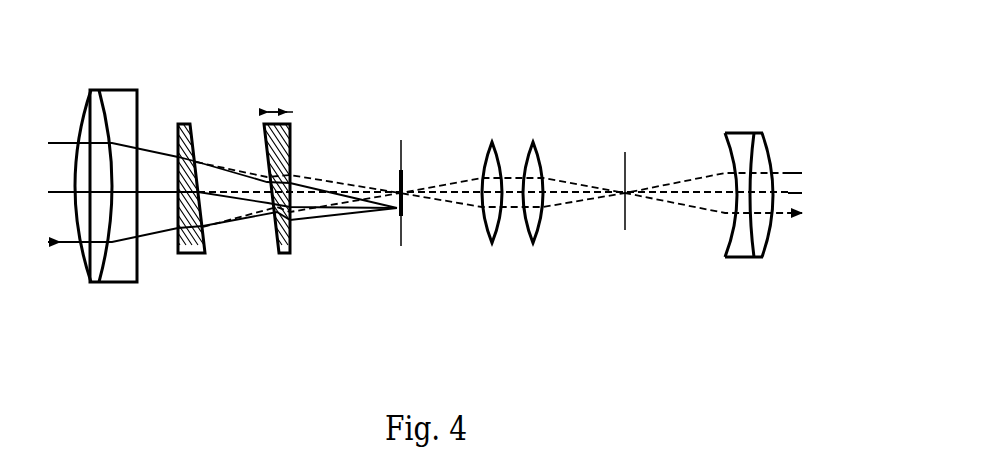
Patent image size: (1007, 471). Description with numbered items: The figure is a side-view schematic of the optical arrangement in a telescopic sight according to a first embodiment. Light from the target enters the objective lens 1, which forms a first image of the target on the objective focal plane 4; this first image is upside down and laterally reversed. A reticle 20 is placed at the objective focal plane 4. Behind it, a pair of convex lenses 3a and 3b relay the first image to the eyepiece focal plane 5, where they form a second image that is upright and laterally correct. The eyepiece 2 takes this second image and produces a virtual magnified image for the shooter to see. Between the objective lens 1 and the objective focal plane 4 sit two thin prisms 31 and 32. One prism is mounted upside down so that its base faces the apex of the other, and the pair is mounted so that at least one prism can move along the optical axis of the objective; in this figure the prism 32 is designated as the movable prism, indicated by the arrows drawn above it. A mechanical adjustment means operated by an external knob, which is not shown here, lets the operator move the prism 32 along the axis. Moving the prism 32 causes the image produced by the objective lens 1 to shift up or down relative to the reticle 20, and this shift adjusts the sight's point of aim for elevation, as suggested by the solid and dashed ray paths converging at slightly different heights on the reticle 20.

The objective lens 1 is at (140, 116).
The eyepiece 2 is at (736, 133).
The reticle 20 is at (404, 170).
The objective focal plane 4 is at (402, 243).
The eyepiece focal plane 5 is at (626, 152).
The convex lens 3a is at (493, 243).
The convex lens 3b is at (537, 242).
The thin prism 31 is at (197, 256).
The movable prism 32 is at (291, 256).